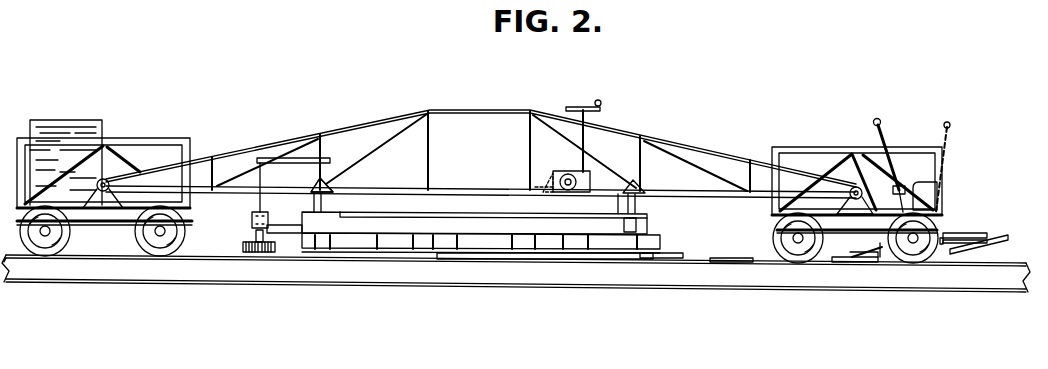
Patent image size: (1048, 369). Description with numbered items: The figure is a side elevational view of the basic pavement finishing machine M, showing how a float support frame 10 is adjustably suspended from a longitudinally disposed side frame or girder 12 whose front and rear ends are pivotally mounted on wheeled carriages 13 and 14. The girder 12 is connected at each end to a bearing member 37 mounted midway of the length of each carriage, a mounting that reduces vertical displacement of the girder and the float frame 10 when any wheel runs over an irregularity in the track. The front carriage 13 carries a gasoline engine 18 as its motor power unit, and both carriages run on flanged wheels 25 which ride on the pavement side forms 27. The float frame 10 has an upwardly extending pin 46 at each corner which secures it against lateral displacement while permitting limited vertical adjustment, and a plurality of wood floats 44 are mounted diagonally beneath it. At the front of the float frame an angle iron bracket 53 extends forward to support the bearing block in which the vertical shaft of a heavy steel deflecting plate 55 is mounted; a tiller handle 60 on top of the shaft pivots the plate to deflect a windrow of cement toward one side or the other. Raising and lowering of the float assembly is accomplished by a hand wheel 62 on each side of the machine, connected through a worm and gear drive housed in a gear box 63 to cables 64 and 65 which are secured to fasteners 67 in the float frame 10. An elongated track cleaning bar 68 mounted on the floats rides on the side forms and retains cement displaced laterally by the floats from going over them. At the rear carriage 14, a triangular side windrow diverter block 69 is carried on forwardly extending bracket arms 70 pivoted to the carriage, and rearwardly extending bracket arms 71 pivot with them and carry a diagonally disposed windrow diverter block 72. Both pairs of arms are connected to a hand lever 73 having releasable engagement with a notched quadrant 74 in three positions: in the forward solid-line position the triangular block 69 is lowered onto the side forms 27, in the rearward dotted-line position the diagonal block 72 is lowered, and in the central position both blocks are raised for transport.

The float support frame 10 is at (630, 228).
The side frame girder 12 is at (360, 126).
The front carriage 13 is at (104, 147).
The rear carriage 14 is at (861, 152).
The gasoline engine 18 is at (52, 130).
The flanged wheels 25 is at (143, 240).
The pavement side forms 27 is at (734, 279).
The bearing members 37 is at (103, 178).
The floats 44 is at (380, 253).
The upwardly extending pin 46 is at (312, 198).
The angle iron bracket 53 is at (278, 228).
The deflecting plate 55 is at (233, 247).
The tiller handle 60 is at (303, 160).
The hand wheel 62 is at (601, 104).
The gear box 63 is at (566, 175).
The cable 64 is at (322, 193).
The cable 65 is at (640, 207).
The fasteners 67 is at (630, 218).
The track cleaning bar 68 is at (468, 256).
The triangular side windrow diverter block 69 is at (837, 262).
The bracket arms 70 is at (876, 254).
The bracket arms 71 is at (945, 247).
The diagonal windrow diverter block 72 is at (997, 251).
The hand lever 73 is at (876, 119).
The notched quadrant 74 is at (933, 186).
The machine M is at (481, 134).